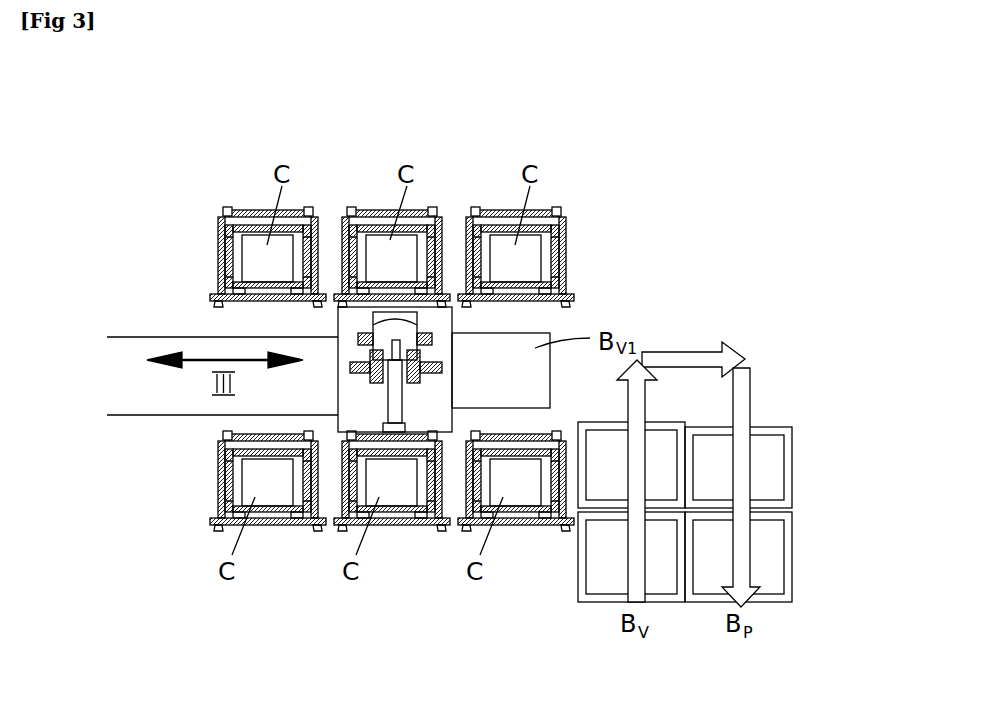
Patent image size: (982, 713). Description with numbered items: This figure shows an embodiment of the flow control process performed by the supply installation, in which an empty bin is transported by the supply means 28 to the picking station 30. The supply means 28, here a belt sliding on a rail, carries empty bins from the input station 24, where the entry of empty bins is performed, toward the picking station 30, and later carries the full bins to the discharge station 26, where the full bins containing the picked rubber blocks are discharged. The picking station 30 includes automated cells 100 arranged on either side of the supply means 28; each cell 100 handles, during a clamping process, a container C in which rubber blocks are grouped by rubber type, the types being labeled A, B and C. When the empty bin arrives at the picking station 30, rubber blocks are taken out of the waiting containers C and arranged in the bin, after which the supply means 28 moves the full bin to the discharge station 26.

The automated cell 100 is at (232, 262).
The supply means 28 is at (160, 402).
The picking station 30 is at (683, 212).
The input station 24 is at (582, 602).
The discharge station 26 is at (797, 598).